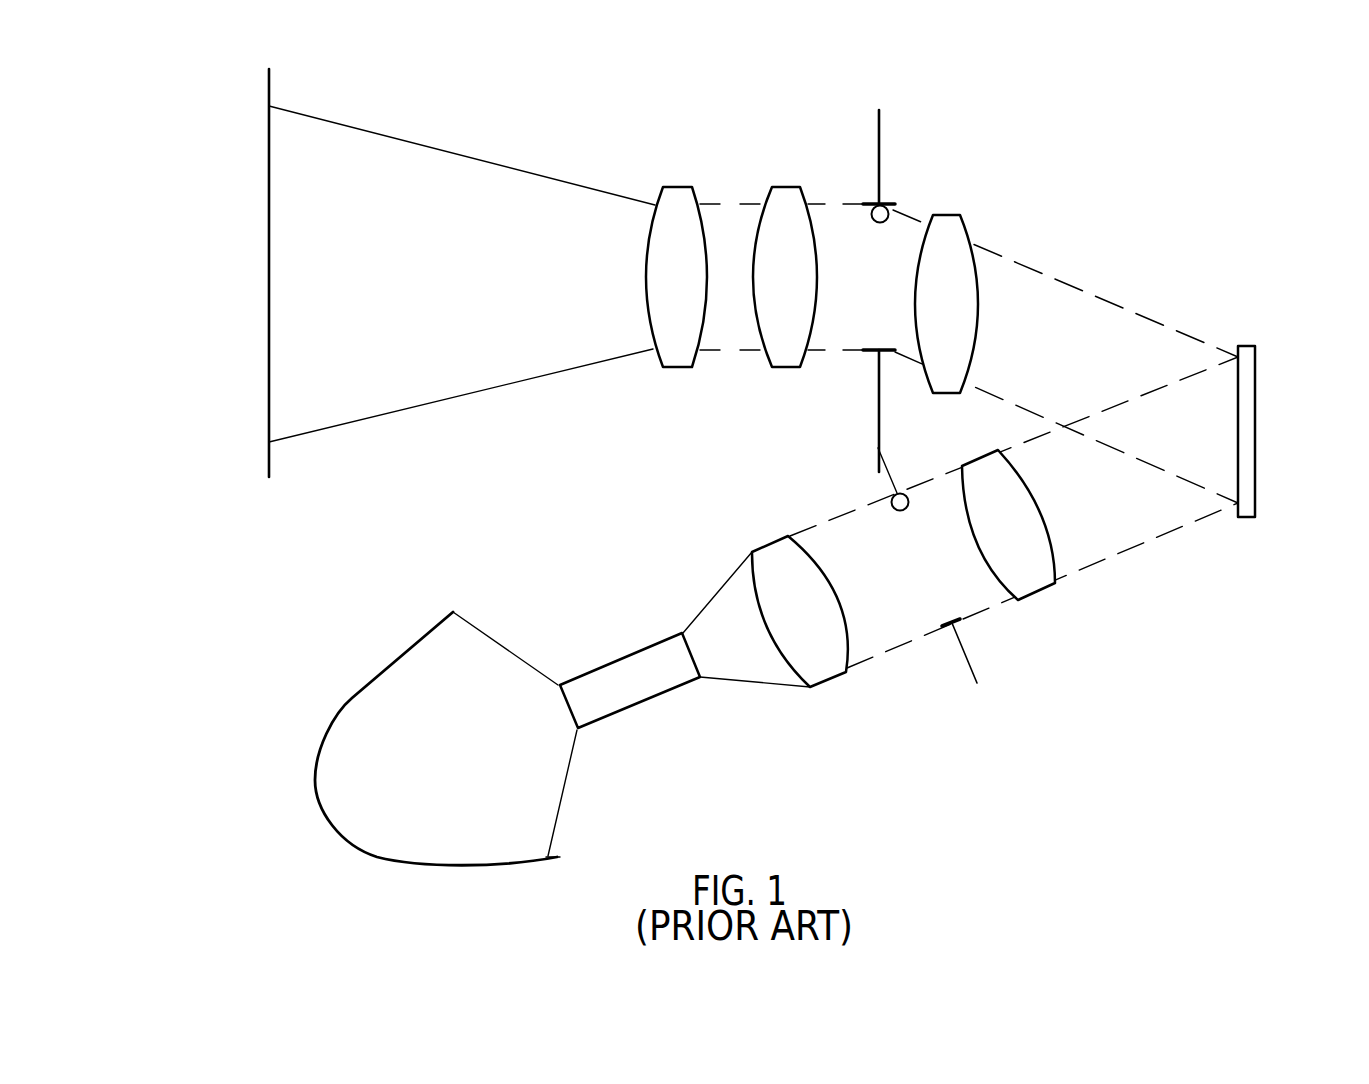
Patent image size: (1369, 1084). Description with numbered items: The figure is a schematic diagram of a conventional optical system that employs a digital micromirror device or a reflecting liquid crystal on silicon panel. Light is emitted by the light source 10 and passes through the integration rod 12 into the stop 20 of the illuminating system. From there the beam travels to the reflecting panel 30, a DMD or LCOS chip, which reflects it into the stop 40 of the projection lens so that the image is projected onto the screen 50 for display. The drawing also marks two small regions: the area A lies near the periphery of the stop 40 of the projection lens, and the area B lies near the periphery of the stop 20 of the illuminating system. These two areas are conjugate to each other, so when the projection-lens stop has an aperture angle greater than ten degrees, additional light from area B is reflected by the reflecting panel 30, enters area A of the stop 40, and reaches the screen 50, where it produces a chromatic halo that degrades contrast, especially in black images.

The light source 10 is at (377, 675).
The integration rod 12 is at (630, 653).
The stop of an illuminating system 20 is at (906, 643).
The reflecting panel 30 is at (1257, 363).
The stop of a projection lens 40 is at (880, 142).
The screen 50 is at (268, 230).
The area near the periphery of the stop of the projection lens A is at (896, 207).
The area near the periphery of the stop of the illuminating system B is at (892, 500).